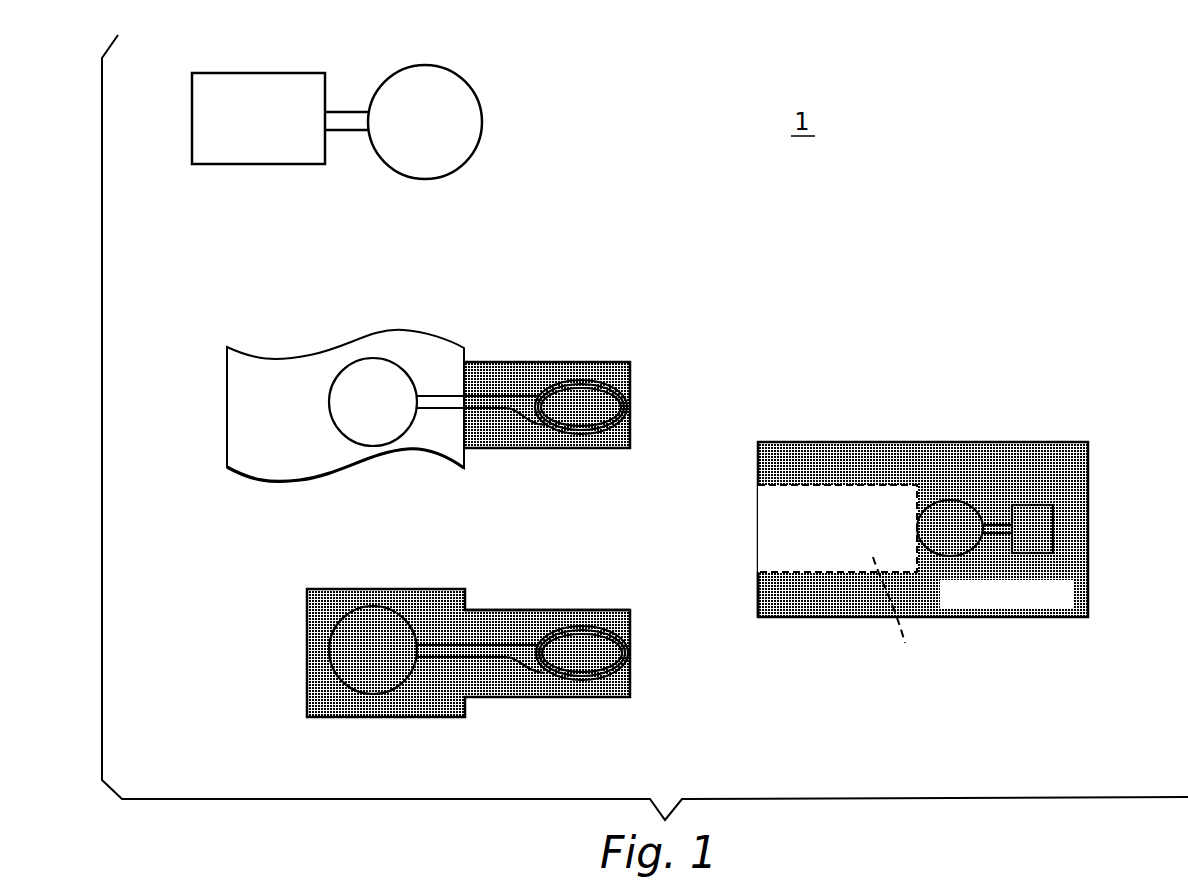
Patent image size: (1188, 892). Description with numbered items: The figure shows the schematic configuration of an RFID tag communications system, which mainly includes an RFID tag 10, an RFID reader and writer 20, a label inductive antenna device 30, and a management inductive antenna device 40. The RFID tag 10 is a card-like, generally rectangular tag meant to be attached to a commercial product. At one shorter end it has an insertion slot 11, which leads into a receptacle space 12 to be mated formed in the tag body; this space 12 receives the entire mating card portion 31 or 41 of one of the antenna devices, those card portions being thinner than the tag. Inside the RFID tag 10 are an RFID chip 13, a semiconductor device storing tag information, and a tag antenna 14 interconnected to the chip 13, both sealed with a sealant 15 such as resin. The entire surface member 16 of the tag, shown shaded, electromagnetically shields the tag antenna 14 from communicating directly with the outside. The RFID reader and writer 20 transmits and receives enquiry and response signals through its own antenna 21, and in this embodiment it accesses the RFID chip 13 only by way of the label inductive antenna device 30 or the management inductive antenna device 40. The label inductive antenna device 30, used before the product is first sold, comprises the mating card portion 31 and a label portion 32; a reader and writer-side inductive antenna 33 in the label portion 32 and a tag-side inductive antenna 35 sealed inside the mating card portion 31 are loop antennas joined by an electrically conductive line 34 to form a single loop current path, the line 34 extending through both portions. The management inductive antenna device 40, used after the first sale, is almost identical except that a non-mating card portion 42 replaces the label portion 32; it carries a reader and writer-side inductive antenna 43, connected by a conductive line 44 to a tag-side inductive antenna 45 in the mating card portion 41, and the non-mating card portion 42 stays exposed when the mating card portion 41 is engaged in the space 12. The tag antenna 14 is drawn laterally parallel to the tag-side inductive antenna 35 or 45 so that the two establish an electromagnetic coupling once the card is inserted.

The RFID tag 10 is at (923, 519).
The insertion slot 11 is at (757, 525).
The receptacle space to be mated 12 is at (898, 615).
The RFID chip 13 is at (1058, 527).
The tag antenna 14 is at (963, 502).
The sealant 15 is at (842, 593).
The surface member 16 is at (1089, 590).
The RFID reader and writer 20 is at (192, 120).
The antenna 21 is at (483, 122).
The label inductive antenna device 30 is at (393, 411).
The mating card portion 31 is at (535, 362).
The label portion 32 is at (227, 412).
The reader and writer-side inductive antenna 33 is at (348, 361).
The electrically conductive line 34 is at (493, 380).
The tag-side inductive antenna 35 is at (583, 375).
The management inductive antenna device 40 is at (426, 649).
The mating card portion 41 is at (525, 608).
The non-mating card portion 42 is at (307, 657).
The reader and writer-side inductive antenna 43 is at (375, 605).
The conductive line 44 is at (500, 658).
The tag-side inductive antenna 45 is at (580, 680).